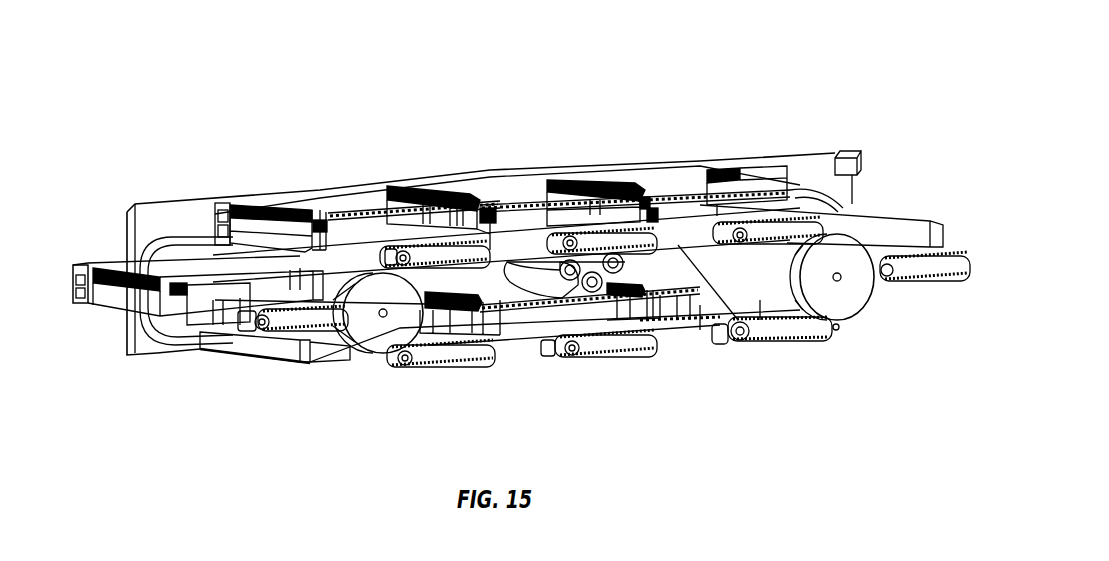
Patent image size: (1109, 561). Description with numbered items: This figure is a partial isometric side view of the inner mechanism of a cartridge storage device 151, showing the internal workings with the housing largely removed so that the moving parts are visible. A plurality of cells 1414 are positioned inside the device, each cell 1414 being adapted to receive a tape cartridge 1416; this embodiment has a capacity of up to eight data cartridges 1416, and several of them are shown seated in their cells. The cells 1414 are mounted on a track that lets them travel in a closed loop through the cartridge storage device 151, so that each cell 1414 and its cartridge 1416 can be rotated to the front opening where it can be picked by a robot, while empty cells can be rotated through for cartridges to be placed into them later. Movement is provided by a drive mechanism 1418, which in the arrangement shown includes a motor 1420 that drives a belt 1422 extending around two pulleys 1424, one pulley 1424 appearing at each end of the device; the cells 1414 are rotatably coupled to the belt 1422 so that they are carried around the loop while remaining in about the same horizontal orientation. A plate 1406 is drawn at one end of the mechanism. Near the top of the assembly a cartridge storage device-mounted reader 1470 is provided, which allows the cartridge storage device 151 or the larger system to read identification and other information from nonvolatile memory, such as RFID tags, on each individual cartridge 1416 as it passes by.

The cartridge storage device 151 is at (786, 88).
The end plate 1406 is at (127, 227).
The cell 1414 is at (222, 345).
The tape cartridge 1416 is at (493, 193).
The drive mechanism 1418 is at (580, 318).
The motor 1420 is at (543, 287).
The belt 1422 is at (733, 346).
The pulley 1424 is at (885, 297).
The cartridge storage device-mounted reader 1470 is at (858, 163).